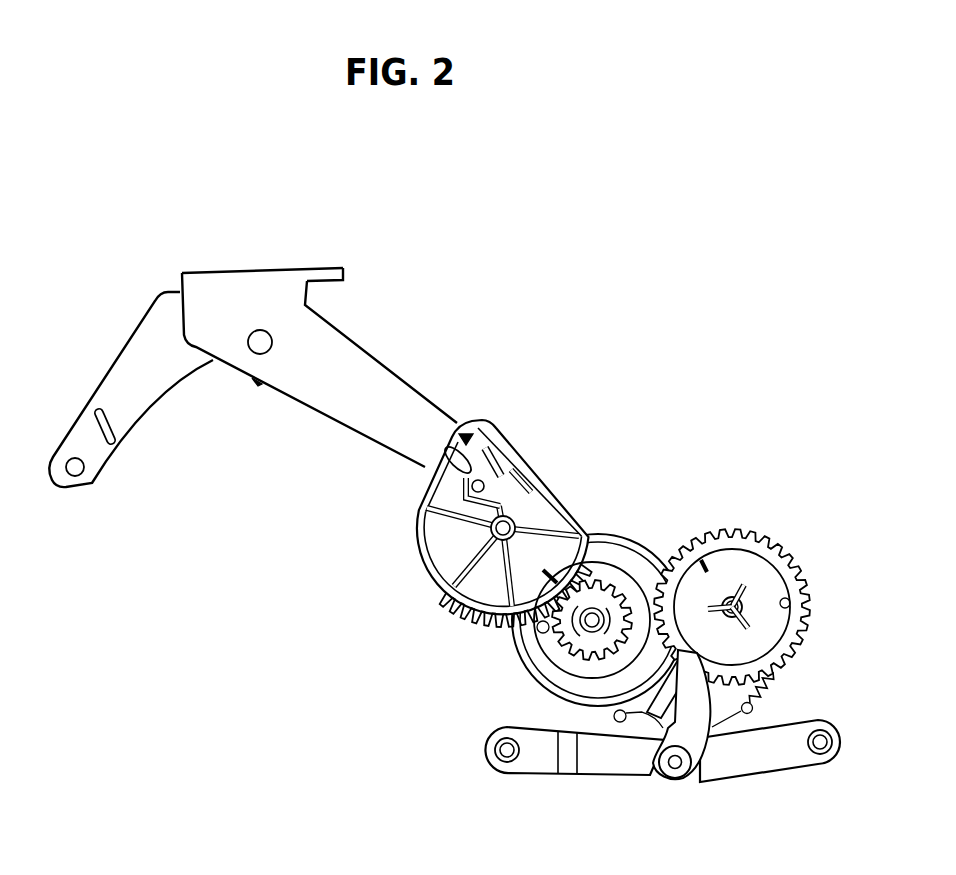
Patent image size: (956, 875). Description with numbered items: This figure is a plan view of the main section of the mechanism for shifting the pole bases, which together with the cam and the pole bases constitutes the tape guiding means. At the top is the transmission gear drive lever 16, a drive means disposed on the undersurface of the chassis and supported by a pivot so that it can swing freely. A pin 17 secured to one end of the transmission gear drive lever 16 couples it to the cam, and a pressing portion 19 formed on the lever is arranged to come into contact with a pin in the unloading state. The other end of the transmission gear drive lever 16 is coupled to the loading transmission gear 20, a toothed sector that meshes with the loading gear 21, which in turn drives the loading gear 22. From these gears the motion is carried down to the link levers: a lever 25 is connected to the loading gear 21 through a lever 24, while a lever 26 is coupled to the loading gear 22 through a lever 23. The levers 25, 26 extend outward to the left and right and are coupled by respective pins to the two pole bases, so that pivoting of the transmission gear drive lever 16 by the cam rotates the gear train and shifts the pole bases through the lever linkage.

The transmission gear drive lever 16 is at (368, 372).
The pin 17 is at (95, 519).
The pressing portion 19 is at (363, 243).
The loading transmission gear 20 is at (604, 504).
The loading gear 21 is at (683, 512).
The loading gear 22 is at (790, 510).
The lever 23 is at (736, 797).
The lever 24 is at (613, 797).
The lever 25 is at (590, 762).
The lever 26 is at (800, 797).